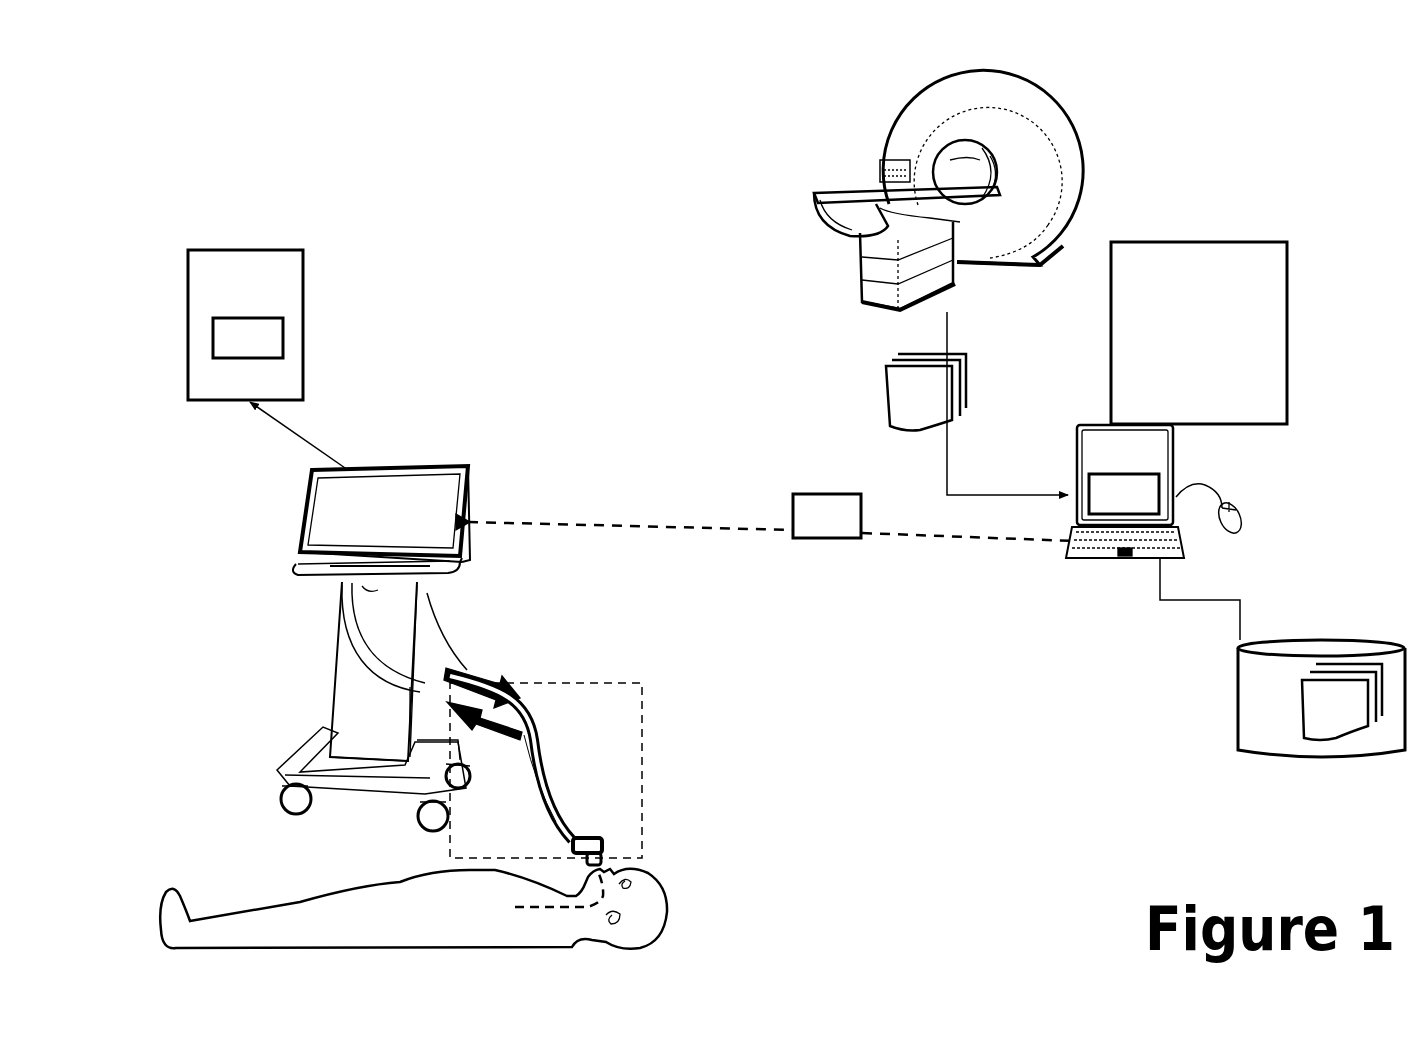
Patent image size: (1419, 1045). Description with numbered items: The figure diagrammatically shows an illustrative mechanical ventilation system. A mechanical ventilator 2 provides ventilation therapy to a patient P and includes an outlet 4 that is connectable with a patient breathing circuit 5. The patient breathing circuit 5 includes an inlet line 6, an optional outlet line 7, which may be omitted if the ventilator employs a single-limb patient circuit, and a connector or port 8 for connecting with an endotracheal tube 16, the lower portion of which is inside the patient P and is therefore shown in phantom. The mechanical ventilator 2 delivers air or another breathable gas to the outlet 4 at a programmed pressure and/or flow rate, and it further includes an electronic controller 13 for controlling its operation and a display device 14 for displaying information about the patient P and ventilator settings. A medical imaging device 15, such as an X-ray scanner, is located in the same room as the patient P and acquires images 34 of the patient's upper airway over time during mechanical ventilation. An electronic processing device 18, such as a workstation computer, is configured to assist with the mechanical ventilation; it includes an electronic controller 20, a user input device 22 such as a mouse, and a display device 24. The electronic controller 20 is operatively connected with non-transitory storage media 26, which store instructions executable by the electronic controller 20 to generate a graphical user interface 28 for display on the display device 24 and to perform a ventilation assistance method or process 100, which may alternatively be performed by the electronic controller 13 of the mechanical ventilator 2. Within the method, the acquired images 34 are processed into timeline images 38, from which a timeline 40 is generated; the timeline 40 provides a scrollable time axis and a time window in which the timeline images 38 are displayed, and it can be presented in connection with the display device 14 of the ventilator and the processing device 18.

The mechanical ventilator 2 is at (262, 619).
The outlet 4 is at (420, 584).
The patient breathing circuit 5 is at (593, 683).
The inlet line 6 is at (541, 758).
The outlet line 7 is at (528, 748).
The connector or port 8 is at (588, 838).
The electronic controller 13 is at (356, 568).
The display device 14 is at (385, 514).
The medical imaging device 15 is at (862, 124).
The endotracheal tube 16 is at (552, 918).
The electronic processing device 18 is at (1082, 416).
The electronic controller 20 is at (1078, 523).
The user input device 22 is at (1238, 532).
The display device 24 is at (1122, 453).
The non-transitory storage media 26 is at (1296, 630).
The graphical user interface 28 is at (1124, 494).
The images 34 is at (926, 392).
The timeline images 38 is at (1342, 702).
The timeline 40 is at (631, 395).
The ventilation assistance method or process 100 is at (1199, 333).
The patient P is at (408, 885).